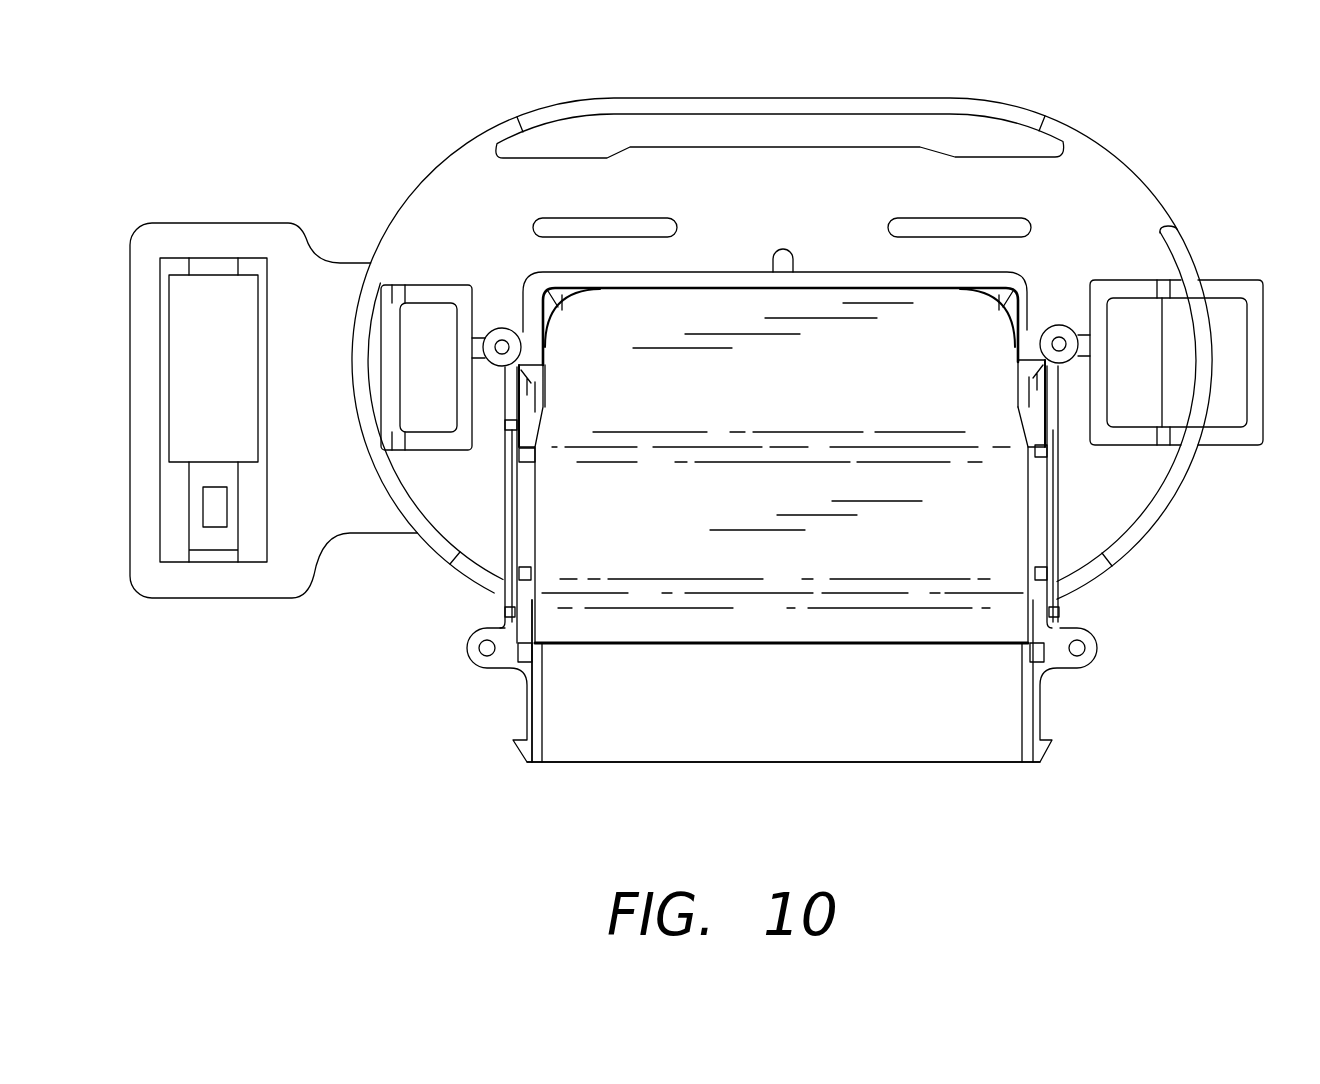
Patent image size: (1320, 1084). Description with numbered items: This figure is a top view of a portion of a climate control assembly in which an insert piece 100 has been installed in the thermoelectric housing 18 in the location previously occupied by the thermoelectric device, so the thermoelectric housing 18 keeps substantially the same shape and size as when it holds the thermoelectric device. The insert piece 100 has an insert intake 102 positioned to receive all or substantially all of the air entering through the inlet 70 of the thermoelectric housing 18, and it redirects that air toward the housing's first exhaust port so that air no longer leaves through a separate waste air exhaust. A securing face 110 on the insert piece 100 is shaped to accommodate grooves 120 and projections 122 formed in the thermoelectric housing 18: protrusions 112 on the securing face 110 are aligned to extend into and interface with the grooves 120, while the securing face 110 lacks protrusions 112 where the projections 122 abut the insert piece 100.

The thermoelectric housing 18 is at (487, 172).
The inlet 70 is at (650, 762).
The insert piece 100 is at (980, 553).
The insert intake 102 is at (617, 643).
The securing face 110 is at (528, 318).
The protrusions 112 is at (538, 300).
The grooves 120 is at (992, 285).
The projections 122 is at (1050, 355).